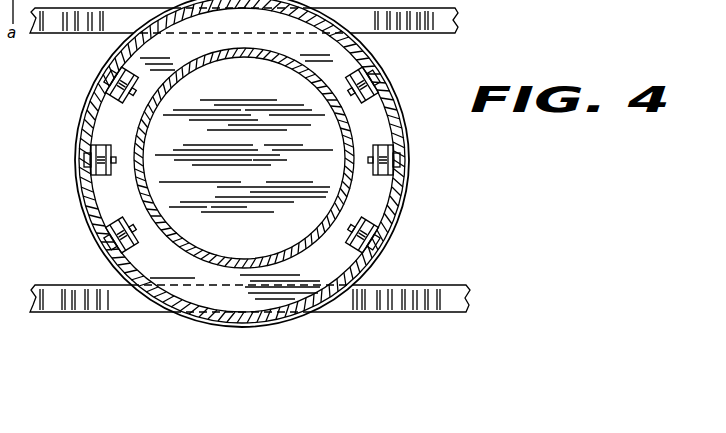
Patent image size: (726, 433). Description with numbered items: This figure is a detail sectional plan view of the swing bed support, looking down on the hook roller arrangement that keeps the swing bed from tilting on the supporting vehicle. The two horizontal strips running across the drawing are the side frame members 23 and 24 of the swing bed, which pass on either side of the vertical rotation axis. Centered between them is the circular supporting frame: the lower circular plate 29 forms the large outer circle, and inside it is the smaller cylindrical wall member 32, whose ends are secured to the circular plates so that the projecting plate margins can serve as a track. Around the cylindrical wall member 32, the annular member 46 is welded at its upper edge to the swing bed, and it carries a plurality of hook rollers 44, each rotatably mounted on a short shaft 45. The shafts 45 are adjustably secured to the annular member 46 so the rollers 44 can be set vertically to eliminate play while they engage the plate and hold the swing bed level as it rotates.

The side frame member 23 is at (433, 288).
The side frame member 24 is at (437, 24).
The lower circular plate 29 is at (408, 199).
The cylindrical wall member 32 is at (236, 56).
The hook roller 44 is at (90, 149).
The short shaft 45 is at (143, 226).
The annular member 46 is at (403, 182).